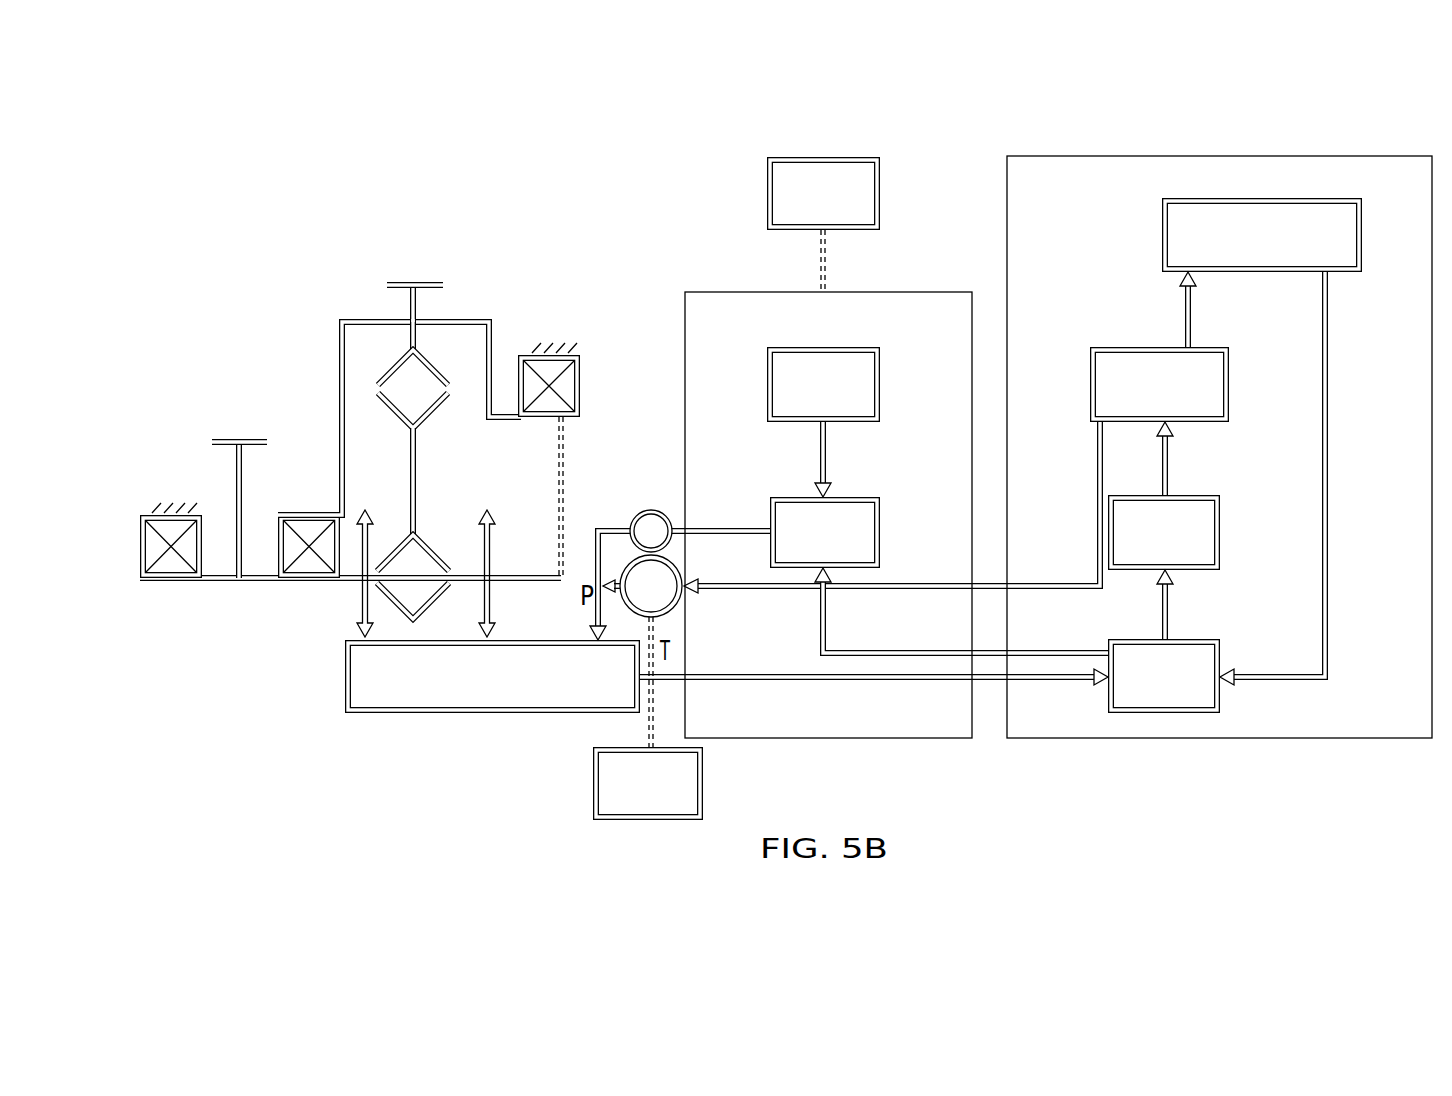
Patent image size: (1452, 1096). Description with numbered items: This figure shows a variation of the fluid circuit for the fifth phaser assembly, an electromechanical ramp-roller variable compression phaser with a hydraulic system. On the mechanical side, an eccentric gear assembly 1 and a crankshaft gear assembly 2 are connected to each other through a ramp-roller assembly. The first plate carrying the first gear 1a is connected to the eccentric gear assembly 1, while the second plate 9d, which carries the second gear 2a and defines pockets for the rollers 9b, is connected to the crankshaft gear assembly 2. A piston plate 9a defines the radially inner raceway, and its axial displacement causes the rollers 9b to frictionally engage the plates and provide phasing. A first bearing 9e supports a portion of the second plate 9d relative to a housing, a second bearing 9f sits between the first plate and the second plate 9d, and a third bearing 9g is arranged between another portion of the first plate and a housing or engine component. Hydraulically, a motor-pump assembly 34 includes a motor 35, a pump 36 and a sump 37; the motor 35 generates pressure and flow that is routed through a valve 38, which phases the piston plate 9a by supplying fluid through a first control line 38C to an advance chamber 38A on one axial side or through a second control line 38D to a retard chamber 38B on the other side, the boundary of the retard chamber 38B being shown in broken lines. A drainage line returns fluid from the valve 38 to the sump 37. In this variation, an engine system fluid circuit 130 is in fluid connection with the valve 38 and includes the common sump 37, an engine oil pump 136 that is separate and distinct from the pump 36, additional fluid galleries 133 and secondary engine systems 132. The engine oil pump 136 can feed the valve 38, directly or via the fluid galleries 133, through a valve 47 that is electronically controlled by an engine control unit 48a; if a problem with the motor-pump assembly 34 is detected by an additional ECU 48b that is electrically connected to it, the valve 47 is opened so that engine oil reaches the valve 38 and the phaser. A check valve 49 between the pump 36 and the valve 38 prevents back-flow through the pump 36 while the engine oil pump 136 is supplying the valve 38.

The eccentric gear assembly 1 is at (207, 414).
The first gear 1a is at (258, 438).
The crankshaft gear assembly 2 is at (450, 262).
The second gear 2a is at (405, 280).
The piston plate 9a is at (408, 452).
The rollers 9b is at (415, 380).
The second plate 9d is at (413, 345).
The first bearing 9e is at (573, 386).
The second bearing 9f is at (308, 570).
The third bearing 9g is at (140, 520).
The motor-pump assembly 34 is at (905, 292).
The motor 35 is at (872, 384).
The pump 36 is at (872, 527).
The sump 37 is at (1210, 652).
The valve 38 is at (478, 713).
The advance chamber 38A is at (372, 470).
The retard chamber 38B is at (470, 490).
The first control line 38C is at (345, 616).
The second control line 38D is at (490, 588).
The valve 47 is at (668, 597).
The engine control unit 48a is at (698, 786).
The additional ECU 48b is at (878, 186).
The check valve 49 is at (650, 510).
The engine system fluid circuit 130 is at (1362, 154).
The secondary engine systems 132 is at (1348, 236).
The fluid galleries 133 is at (1215, 389).
The engine oil pump 136 is at (1203, 531).